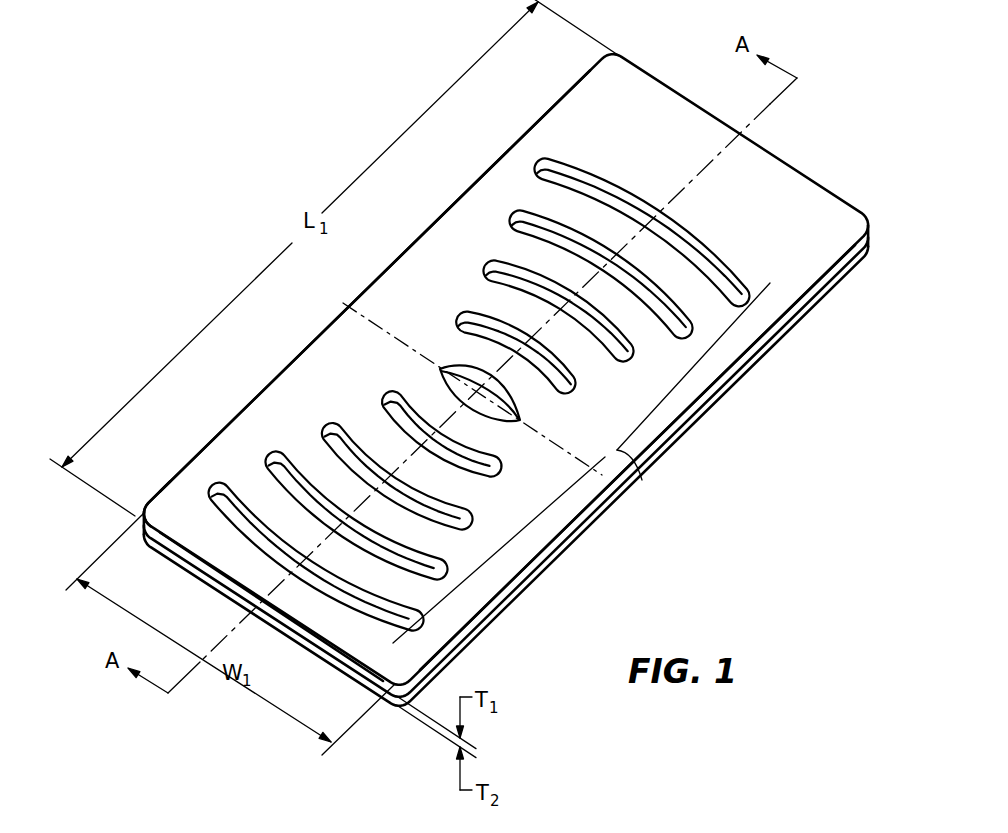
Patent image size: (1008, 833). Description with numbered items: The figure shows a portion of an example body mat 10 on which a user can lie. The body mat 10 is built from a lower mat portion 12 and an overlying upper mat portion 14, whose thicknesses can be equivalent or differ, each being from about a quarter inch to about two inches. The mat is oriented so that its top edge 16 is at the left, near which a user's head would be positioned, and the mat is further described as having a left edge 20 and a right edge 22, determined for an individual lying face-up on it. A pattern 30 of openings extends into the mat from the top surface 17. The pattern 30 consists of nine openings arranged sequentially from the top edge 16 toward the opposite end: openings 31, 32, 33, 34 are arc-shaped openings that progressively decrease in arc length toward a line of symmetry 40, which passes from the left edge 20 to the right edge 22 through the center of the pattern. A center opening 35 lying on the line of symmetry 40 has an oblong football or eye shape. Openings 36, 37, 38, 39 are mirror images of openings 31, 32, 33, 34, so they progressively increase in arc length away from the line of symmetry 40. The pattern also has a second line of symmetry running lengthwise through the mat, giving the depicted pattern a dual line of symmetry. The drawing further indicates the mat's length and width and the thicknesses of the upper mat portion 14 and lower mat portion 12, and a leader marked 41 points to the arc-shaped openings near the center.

The body mat 10 is at (243, 105).
The lower mat portion 12 is at (532, 584).
The upper mat portion 14 is at (574, 529).
The top edge 16 is at (303, 649).
The top surface 17 is at (180, 506).
The left edge 20 is at (704, 412).
The right edge 22 is at (286, 366).
The pattern 30 is at (642, 480).
The opening 31 is at (392, 620).
The opening 32 is at (422, 571).
The opening 33 is at (450, 519).
The opening 34 is at (473, 472).
The center opening 35 is at (501, 418).
The opening 36 is at (557, 364).
The opening 37 is at (598, 320).
The opening 38 is at (647, 279).
The opening 39 is at (732, 290).
The line of symmetry 40 is at (343, 303).
The ribs between slots 41 is at (383, 391).